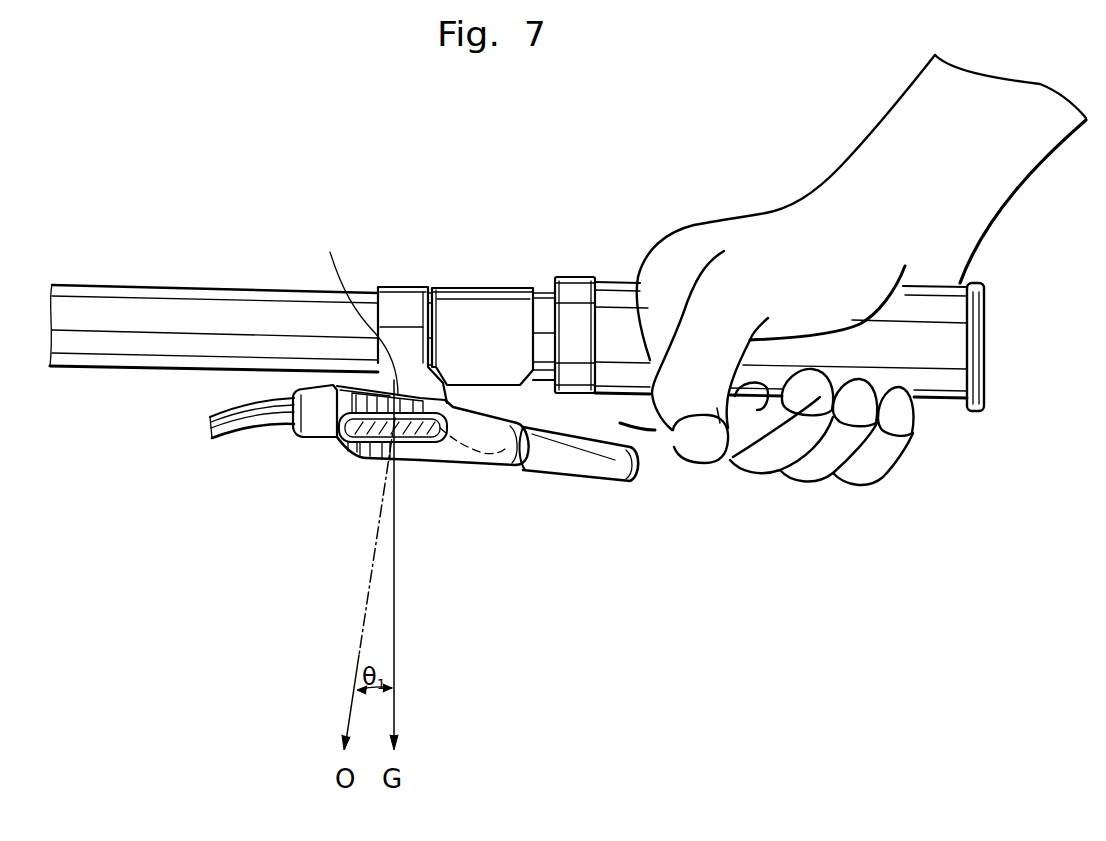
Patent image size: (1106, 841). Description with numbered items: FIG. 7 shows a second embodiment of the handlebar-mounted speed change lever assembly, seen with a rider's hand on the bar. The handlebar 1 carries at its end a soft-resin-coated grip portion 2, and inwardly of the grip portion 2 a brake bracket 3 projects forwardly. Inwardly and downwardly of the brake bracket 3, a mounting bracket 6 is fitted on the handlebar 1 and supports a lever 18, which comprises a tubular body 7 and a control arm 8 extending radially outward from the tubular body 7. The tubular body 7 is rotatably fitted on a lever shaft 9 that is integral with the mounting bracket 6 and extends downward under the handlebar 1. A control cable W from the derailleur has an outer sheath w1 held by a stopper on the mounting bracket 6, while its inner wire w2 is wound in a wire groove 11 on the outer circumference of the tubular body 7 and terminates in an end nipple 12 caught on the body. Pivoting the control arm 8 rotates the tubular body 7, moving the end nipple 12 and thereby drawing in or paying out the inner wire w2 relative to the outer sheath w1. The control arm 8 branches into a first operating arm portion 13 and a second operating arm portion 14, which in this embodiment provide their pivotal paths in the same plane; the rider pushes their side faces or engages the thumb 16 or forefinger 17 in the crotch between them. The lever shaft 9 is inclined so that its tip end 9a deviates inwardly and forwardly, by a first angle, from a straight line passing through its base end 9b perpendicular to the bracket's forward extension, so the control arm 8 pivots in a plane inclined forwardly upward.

The handlebar 1 is at (80, 372).
The grip portion 2 is at (950, 410).
The brake bracket 3 is at (517, 287).
The mounting bracket 6 is at (408, 283).
The tubular body 7 is at (345, 452).
The control arm 8 is at (580, 484).
The lever shaft 9 is at (442, 397).
The tip end of lever shaft 9a is at (390, 455).
The base end of lever shaft 9b is at (359, 309).
The wire groove 11 is at (418, 455).
The end nipple 12 is at (466, 435).
The first operating arm portion 13 is at (532, 478).
The second operating arm portion 14 is at (634, 486).
The thumb 16 is at (721, 466).
The forefinger 17 is at (650, 410).
The lever 18 is at (612, 503).
The control cable W is at (212, 443).
The outer sheath w1 is at (265, 438).
The inner wire w2 is at (367, 462).